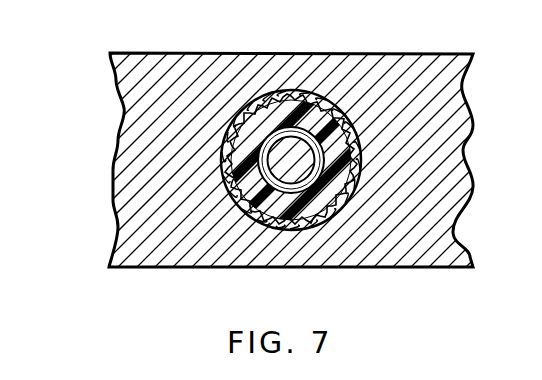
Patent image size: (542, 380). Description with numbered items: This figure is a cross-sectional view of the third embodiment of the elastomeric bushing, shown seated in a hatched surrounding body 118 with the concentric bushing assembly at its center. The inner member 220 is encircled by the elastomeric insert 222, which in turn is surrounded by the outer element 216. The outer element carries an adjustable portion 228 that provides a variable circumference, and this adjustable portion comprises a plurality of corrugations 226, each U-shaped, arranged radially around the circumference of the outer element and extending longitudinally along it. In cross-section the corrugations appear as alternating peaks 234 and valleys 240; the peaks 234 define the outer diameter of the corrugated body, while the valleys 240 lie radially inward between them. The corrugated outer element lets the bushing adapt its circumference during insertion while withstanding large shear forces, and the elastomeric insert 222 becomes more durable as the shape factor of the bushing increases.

The hatched plate body 118 is at (233, 198).
The outer ring boundary 216 is at (281, 100).
The inner tube ring 220 is at (270, 133).
The elastomeric insert 222 is at (305, 95).
The corrugations 226 is at (362, 120).
The adjustable portion 228 is at (297, 77).
The peaks 234 is at (335, 205).
The valleys 240 is at (267, 222).